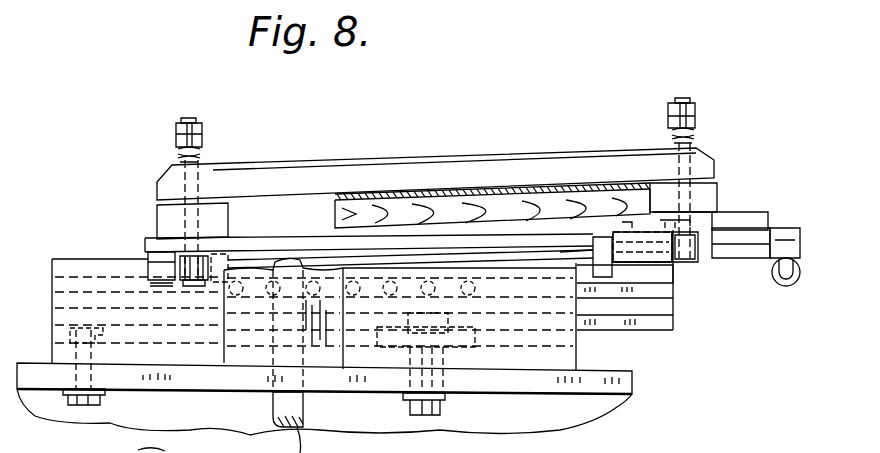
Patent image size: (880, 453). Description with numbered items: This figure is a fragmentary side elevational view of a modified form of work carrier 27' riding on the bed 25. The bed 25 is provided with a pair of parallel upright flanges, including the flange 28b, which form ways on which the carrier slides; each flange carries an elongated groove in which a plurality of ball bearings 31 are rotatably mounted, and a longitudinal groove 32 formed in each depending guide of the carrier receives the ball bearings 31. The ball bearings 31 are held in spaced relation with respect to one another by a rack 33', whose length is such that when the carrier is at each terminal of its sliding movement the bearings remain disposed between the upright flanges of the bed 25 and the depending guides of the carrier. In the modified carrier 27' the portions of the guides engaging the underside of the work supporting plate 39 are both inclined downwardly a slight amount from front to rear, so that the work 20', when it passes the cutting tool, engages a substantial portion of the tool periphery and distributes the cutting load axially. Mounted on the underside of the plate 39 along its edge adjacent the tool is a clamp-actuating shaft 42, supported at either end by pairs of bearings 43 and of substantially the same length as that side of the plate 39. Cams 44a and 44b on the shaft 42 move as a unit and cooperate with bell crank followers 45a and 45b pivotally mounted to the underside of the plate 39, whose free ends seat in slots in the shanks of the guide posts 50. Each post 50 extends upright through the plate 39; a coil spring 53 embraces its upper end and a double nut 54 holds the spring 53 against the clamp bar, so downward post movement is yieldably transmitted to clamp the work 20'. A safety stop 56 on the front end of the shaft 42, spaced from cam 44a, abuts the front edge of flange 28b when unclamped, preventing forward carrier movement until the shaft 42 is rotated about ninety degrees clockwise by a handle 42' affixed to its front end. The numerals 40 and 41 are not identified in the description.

The work 20' is at (492, 179).
The bed 25 is at (587, 351).
The modified form of work carrier 27' is at (723, 203).
The upright flange 28b is at (563, 307).
The ball bearings 31 is at (412, 282).
The longitudinal groove 32 is at (662, 295).
The rack 33' is at (492, 203).
The work supporting plate 39 is at (520, 262).
The block 40 is at (588, 311).
The bar 41 is at (563, 237).
The clamp-actuating shaft 42 is at (601, 190).
The handle 42' is at (781, 277).
The bearings 43 is at (217, 258).
The cam 44a is at (699, 235).
The cam 44b is at (195, 280).
The bell crank follower 45a is at (688, 240).
The bell crank follower 45b is at (224, 250).
The guide post 50 is at (190, 119).
The coil spring 53 is at (178, 157).
The double nut 54 is at (178, 127).
The safety stop 56 is at (597, 262).